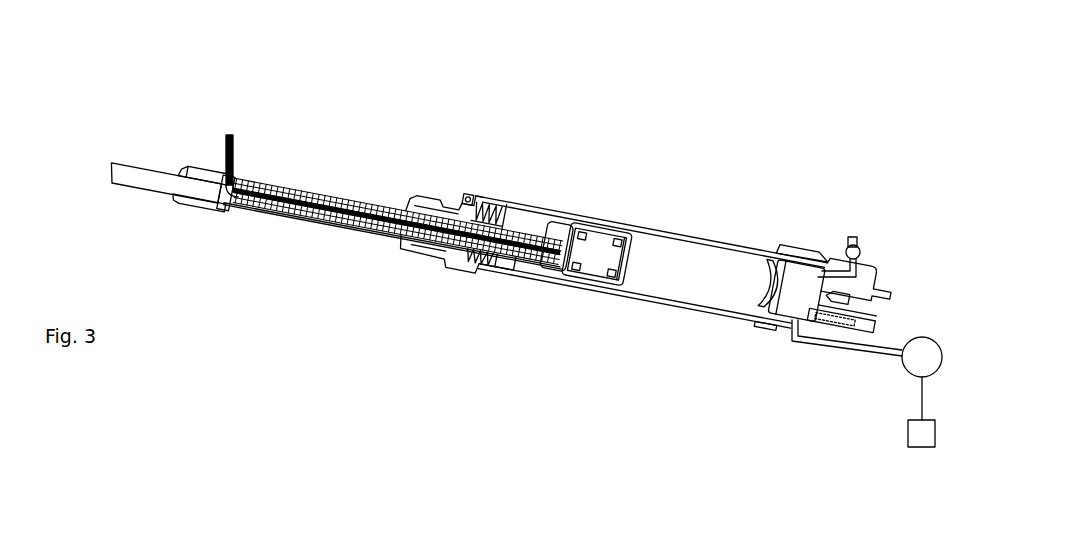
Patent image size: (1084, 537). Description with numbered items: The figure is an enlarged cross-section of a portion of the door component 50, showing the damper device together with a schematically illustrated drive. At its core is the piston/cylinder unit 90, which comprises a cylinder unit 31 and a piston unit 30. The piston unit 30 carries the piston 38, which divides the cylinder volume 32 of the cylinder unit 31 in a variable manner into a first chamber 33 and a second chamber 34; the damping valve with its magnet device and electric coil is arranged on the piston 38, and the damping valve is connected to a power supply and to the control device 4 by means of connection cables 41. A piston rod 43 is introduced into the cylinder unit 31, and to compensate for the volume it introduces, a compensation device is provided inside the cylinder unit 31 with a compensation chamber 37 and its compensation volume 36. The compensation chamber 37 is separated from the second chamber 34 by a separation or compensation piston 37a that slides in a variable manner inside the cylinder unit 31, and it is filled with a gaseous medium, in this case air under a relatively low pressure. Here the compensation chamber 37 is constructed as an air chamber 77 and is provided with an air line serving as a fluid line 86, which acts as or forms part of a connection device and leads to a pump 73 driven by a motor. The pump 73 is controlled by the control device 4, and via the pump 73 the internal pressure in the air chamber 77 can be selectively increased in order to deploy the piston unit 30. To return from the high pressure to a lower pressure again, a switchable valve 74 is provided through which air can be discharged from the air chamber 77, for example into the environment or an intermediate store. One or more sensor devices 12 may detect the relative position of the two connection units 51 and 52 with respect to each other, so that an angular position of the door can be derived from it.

The control device 4 is at (937, 435).
The sensor device 12 is at (315, 200).
The piston unit 30 is at (652, 241).
The cylinder unit 31 is at (733, 247).
The cylinder volume 32 is at (677, 250).
The first chamber 33 is at (538, 265).
The second chamber 34 is at (703, 287).
The compensation volume 36 is at (793, 300).
The compensation chamber 37 is at (767, 332).
The compensation piston 37a is at (757, 280).
The piston 38 is at (595, 265).
The connection cables 41 is at (227, 130).
The piston rod 43 is at (257, 213).
The door component 50 is at (700, 77).
The connection unit 51 is at (132, 173).
The connection unit 52 is at (884, 193).
The pump 73 is at (923, 343).
The switchable valve 74 is at (867, 240).
The air chamber 77 is at (797, 234).
The fluid line 86 is at (845, 350).
The piston/cylinder unit 90 is at (477, 192).